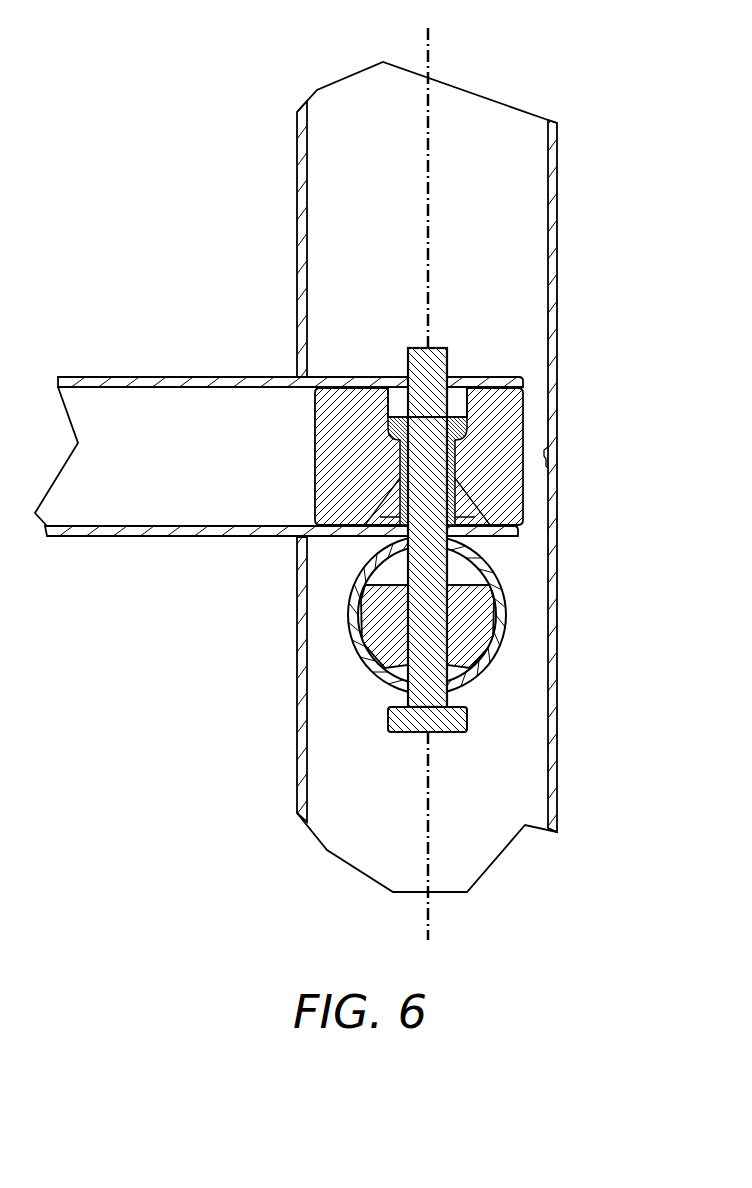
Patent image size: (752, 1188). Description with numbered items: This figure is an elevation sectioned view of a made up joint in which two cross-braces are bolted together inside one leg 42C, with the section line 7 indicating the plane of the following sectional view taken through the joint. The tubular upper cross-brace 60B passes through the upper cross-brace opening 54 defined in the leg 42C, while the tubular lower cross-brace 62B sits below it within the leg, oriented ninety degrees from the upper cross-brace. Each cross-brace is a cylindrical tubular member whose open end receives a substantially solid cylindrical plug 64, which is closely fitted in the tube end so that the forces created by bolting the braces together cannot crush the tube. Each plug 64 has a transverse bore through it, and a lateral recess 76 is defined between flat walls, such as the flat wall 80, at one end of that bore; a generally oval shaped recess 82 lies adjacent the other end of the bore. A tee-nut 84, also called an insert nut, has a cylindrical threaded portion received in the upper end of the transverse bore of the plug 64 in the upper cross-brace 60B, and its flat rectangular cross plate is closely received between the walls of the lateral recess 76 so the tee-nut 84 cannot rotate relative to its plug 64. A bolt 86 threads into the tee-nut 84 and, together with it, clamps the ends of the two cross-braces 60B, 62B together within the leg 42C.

The leg 42C is at (560, 183).
The tubular upper cross-brace 60B is at (127, 377).
The upper cross-brace opening 54 is at (300, 386).
The plug 64 is at (498, 423).
The oval shaped recess 82 is at (390, 543).
The tee-nut 84 is at (398, 413).
The tubular lower cross-brace 62B is at (493, 573).
The lateral recess 76 is at (462, 398).
The flat wall 80 is at (462, 398).
The bolt 86 is at (443, 730).
The section line for FIG. 7 is at (428, 28).